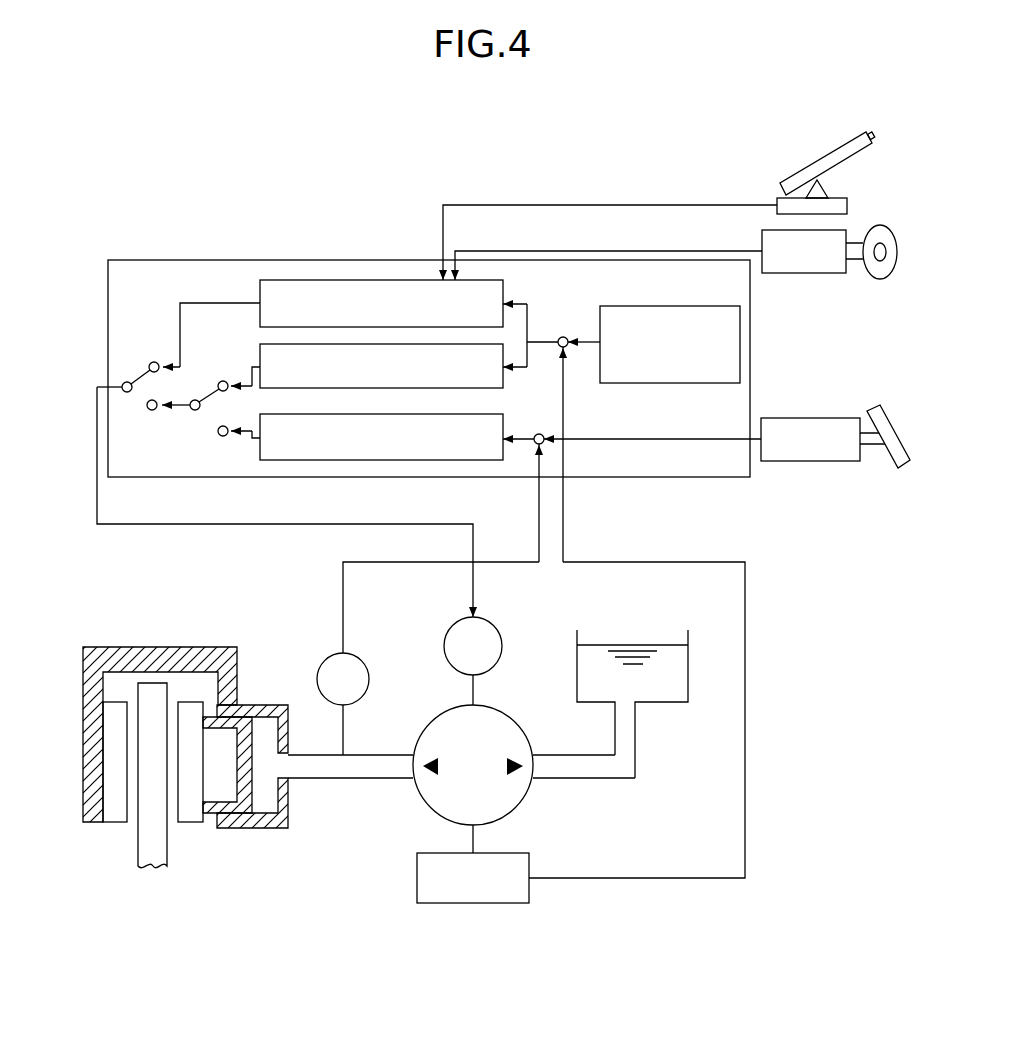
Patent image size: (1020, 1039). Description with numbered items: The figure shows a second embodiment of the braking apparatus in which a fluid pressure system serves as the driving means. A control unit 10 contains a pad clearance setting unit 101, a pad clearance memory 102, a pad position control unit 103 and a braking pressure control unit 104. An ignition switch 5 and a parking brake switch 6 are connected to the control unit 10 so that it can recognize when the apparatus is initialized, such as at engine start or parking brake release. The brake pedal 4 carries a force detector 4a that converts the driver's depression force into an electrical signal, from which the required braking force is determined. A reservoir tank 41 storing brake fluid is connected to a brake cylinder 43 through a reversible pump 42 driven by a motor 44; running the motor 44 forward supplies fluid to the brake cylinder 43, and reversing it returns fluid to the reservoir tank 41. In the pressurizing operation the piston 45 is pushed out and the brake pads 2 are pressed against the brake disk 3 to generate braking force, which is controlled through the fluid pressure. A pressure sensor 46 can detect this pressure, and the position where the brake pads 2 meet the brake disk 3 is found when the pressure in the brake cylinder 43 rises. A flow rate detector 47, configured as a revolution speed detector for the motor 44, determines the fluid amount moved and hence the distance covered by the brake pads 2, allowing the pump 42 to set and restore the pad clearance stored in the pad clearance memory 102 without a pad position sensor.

The control unit 10 is at (707, 477).
The pad clearance setting unit 101 is at (505, 297).
The pad clearance memory 102 is at (657, 385).
The pad position control unit 103 is at (505, 378).
The braking pressure control unit 104 is at (507, 450).
The parking brake switch 6 is at (833, 152).
The ignition switch 5 is at (810, 273).
The force detector 4a is at (818, 461).
The brake pedal 4 is at (885, 457).
The motor 44 is at (446, 632).
The reversible pump 42 is at (432, 716).
The reservoir tank 41 is at (577, 676).
The pressure sensor 46 is at (326, 661).
The piston 45 is at (250, 745).
The brake cylinder 43 is at (262, 828).
The brake pads 2 is at (113, 822).
The brake disk 3 is at (150, 868).
The flow rate detector 47 is at (463, 903).